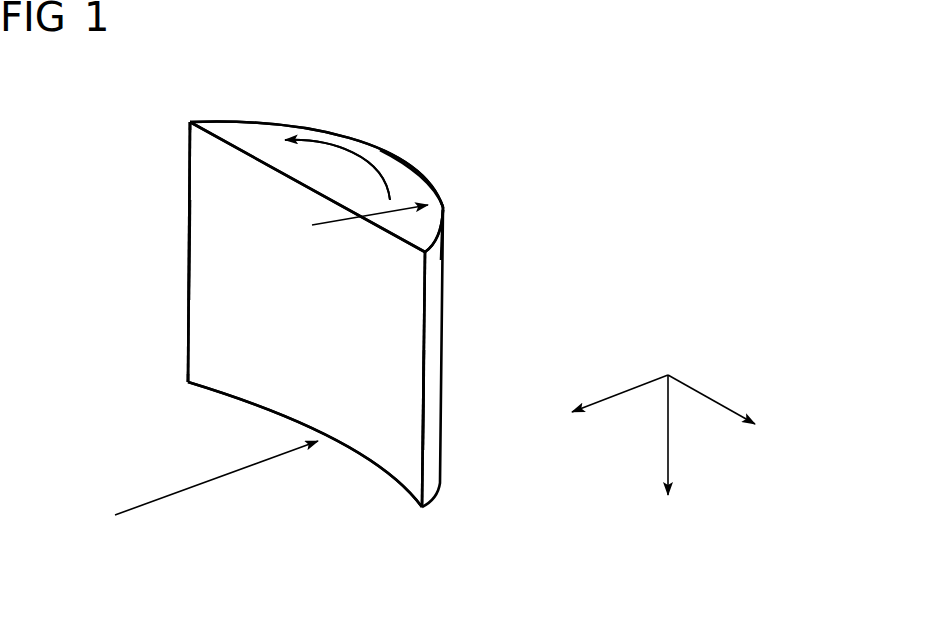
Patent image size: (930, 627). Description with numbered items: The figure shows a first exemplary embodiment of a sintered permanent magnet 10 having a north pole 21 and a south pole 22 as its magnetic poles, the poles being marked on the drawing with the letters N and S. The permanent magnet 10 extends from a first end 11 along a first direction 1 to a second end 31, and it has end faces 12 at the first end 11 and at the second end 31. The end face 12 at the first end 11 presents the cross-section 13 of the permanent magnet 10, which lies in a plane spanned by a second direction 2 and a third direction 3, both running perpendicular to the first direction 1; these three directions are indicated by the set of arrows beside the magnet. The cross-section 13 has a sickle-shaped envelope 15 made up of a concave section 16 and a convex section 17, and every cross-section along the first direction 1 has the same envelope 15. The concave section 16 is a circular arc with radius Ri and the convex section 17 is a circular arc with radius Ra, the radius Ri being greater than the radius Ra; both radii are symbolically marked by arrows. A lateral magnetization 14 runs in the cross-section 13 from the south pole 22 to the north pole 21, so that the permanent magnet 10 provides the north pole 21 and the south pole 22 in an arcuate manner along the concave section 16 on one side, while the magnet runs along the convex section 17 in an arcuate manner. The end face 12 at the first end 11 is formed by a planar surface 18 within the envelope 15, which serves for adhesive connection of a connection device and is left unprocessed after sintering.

The permanent magnet 10 is at (546, 127).
The first end 11 is at (178, 121).
The end face 12 is at (416, 188).
The cross-section 13 is at (263, 124).
The magnetization 14 is at (368, 157).
The envelope 15 is at (256, 154).
The concave section 16 is at (406, 240).
The convex section 17 is at (445, 209).
The surface 18 is at (324, 152).
The north pole 21 is at (197, 280).
The south pole 22 is at (424, 407).
The second end 31 is at (173, 385).
The north pole N is at (208, 268).
The south pole S is at (425, 407).
The radius of convex section Ra is at (330, 227).
The radius of concave section Ri is at (152, 500).
The first direction 1 is at (670, 437).
The second direction 2 is at (715, 400).
The third direction 3 is at (612, 393).